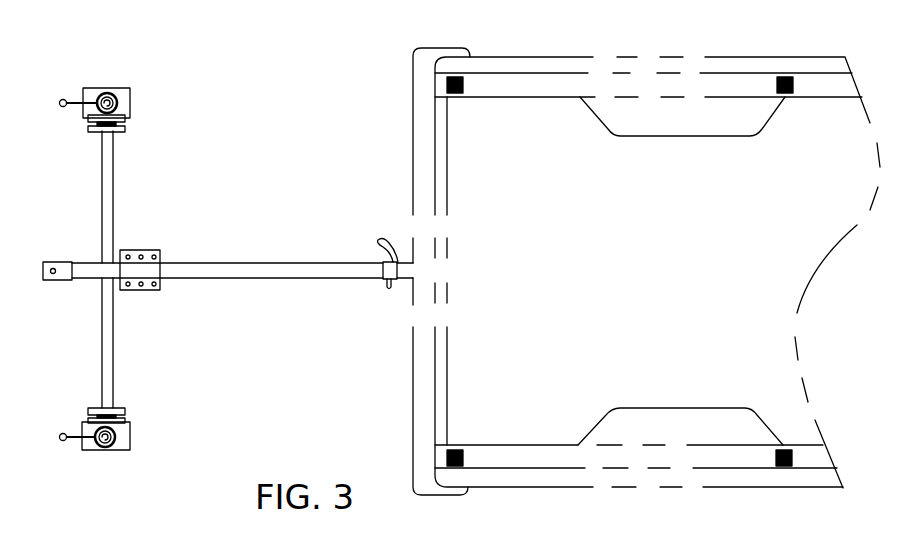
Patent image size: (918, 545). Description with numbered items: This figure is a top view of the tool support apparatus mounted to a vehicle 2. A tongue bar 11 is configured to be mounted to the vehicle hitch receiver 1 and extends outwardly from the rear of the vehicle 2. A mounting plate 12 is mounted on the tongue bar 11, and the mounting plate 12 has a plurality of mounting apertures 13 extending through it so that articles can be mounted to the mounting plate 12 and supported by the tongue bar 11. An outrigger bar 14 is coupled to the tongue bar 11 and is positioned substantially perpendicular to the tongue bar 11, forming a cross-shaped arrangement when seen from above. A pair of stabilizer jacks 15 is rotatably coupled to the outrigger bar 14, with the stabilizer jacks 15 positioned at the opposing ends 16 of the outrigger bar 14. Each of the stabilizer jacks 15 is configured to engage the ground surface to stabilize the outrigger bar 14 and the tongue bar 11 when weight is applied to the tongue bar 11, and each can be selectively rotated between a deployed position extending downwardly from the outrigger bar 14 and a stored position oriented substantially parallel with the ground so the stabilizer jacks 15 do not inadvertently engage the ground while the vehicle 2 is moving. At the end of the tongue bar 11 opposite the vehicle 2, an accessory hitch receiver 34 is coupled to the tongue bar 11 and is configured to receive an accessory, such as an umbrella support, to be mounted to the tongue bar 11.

The vehicle hitch receiver 1 is at (408, 276).
The vehicle 2 is at (523, 132).
The tongue bar 11 is at (241, 269).
The mounting plate 12 is at (157, 250).
The mounting apertures 13 is at (143, 285).
The outrigger bar 14 is at (102, 197).
The stabilizer jacks 15 is at (130, 90).
The opposing ends 16 is at (108, 134).
The accessory hitch receiver 34 is at (58, 280).